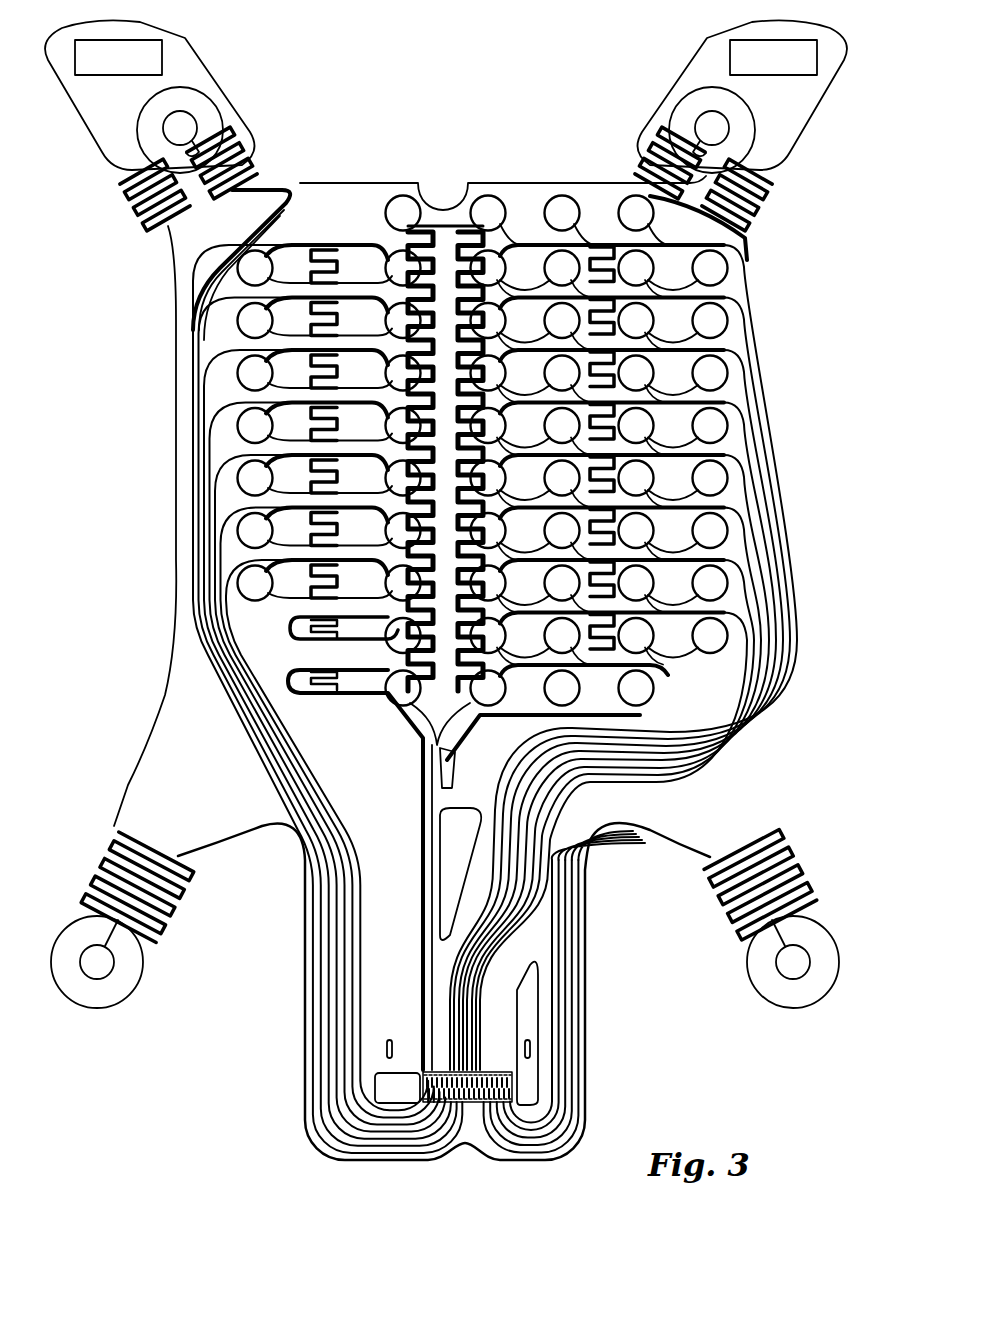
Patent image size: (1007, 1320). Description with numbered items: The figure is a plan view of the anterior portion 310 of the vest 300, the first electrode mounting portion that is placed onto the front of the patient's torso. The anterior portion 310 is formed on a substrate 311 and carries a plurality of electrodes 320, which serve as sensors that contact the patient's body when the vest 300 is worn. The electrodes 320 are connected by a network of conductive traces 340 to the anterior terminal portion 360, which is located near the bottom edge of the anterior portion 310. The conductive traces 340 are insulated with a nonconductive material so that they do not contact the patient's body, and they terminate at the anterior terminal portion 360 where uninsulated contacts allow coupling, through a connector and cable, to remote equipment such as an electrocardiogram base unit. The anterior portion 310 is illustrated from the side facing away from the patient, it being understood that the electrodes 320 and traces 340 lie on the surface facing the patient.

The vest 300 is at (419, 84).
The anterior portion 310 is at (302, 87).
The substrate 311 is at (306, 180).
The electrodes 320 is at (405, 192).
The conductive traces 340 is at (794, 571).
The anterior terminal portion 360 is at (300, 1022).